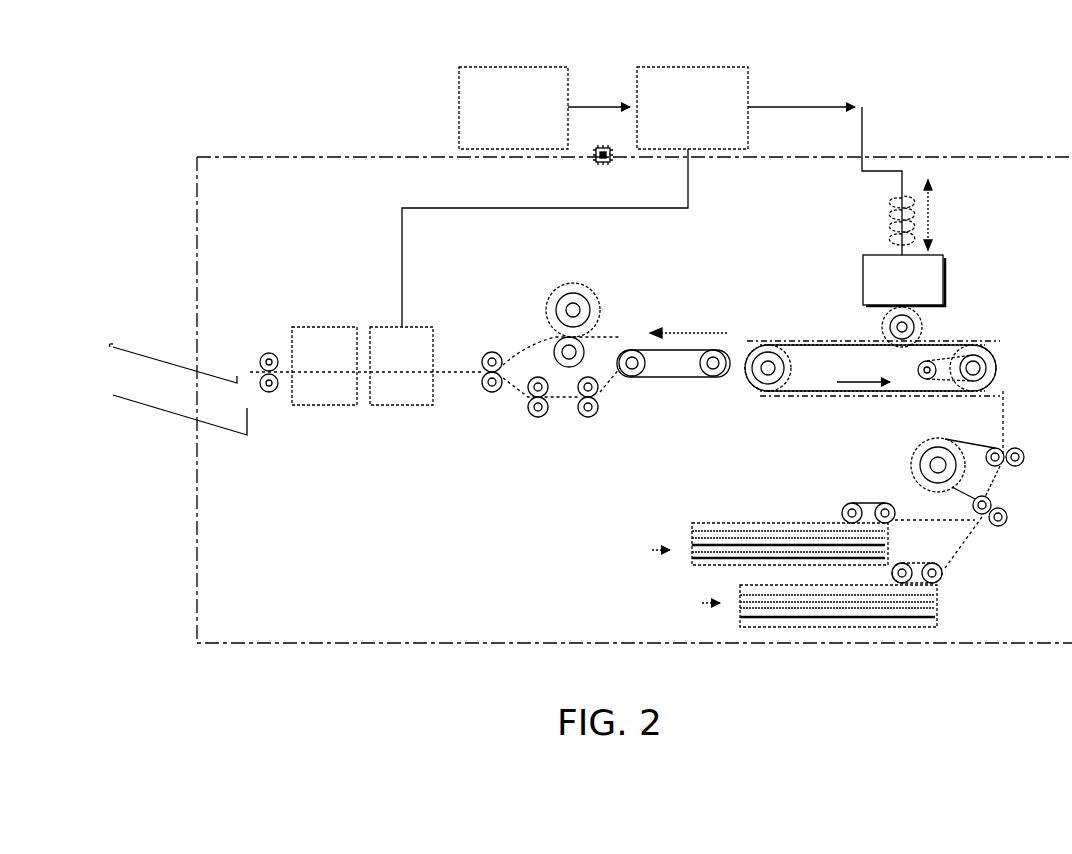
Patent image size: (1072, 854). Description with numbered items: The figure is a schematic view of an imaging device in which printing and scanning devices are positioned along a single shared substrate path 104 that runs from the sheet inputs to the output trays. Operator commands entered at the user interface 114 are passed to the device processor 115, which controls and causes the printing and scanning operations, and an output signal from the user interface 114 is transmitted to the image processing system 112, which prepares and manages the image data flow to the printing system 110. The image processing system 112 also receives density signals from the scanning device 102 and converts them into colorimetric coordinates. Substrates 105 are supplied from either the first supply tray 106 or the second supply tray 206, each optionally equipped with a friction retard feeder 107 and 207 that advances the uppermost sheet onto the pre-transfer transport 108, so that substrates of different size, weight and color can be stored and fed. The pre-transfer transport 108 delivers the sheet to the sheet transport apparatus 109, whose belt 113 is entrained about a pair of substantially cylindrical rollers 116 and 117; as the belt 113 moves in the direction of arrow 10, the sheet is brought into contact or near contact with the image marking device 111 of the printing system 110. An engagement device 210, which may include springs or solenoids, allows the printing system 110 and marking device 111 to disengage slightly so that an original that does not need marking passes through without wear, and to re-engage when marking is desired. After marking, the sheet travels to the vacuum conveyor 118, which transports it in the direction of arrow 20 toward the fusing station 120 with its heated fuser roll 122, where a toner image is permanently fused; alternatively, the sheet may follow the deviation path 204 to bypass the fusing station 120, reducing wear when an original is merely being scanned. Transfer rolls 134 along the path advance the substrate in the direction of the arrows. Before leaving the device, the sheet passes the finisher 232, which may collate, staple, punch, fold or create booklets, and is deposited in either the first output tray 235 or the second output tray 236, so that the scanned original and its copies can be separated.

The arrow 10 is at (853, 393).
The arrow 20 is at (685, 328).
The scanning device 102 is at (401, 366).
The shared substrate path 104 is at (455, 370).
The substrate 105 is at (757, 522).
The substrate supply tray 106 is at (635, 551).
The friction retard feeder 107 is at (860, 507).
The pre-transfer transport 108 is at (1000, 485).
The sheet transport apparatus 109 is at (833, 410).
The printing system 110 is at (904, 280).
The image marking device 111 is at (925, 320).
The image processing system 112 is at (662, 67).
The belt 113 is at (785, 345).
The user interface 114 is at (511, 67).
The device processor 115 is at (596, 165).
The cylindrical roller 116 is at (763, 378).
The cylindrical roller 117 is at (970, 390).
The vacuum conveyor 118 is at (677, 380).
The fusing station 120 is at (556, 280).
The heated fuser roll 122 is at (572, 285).
The transfer roll 134 is at (257, 346).
The deviation path 204 is at (565, 410).
The supply tray 206 is at (787, 606).
The friction retard feeder 207 is at (945, 580).
The engagement device 210 is at (892, 240).
The finisher 232 is at (324, 366).
The first output tray 235 is at (128, 352).
The second output tray 236 is at (170, 420).